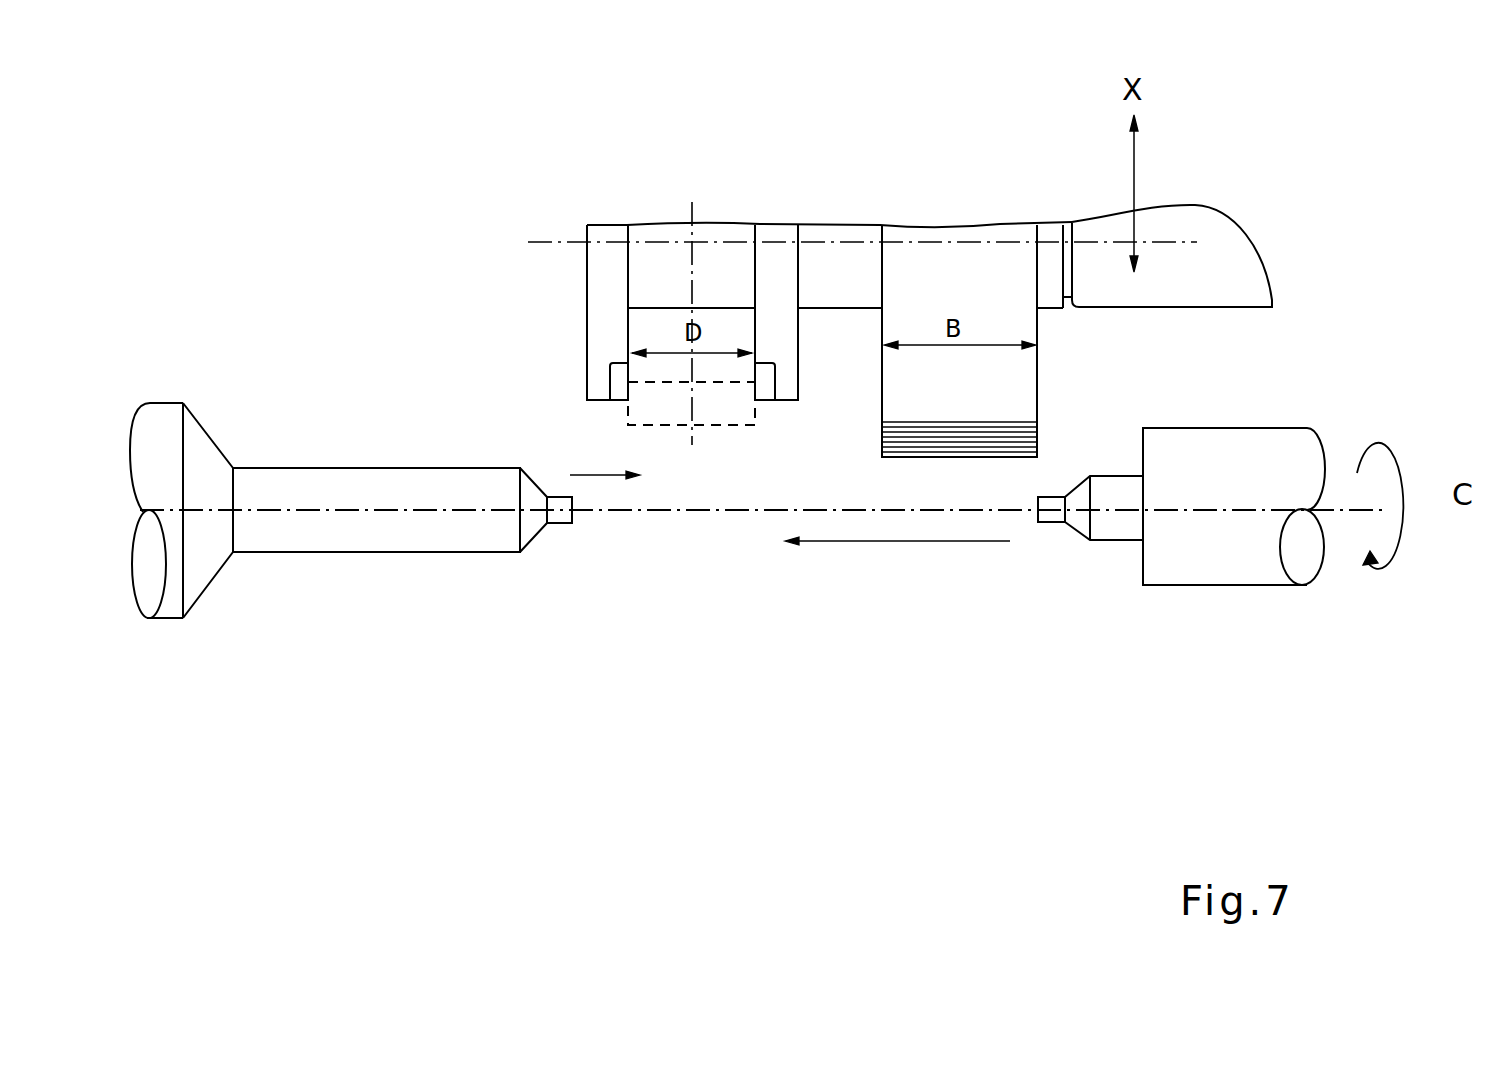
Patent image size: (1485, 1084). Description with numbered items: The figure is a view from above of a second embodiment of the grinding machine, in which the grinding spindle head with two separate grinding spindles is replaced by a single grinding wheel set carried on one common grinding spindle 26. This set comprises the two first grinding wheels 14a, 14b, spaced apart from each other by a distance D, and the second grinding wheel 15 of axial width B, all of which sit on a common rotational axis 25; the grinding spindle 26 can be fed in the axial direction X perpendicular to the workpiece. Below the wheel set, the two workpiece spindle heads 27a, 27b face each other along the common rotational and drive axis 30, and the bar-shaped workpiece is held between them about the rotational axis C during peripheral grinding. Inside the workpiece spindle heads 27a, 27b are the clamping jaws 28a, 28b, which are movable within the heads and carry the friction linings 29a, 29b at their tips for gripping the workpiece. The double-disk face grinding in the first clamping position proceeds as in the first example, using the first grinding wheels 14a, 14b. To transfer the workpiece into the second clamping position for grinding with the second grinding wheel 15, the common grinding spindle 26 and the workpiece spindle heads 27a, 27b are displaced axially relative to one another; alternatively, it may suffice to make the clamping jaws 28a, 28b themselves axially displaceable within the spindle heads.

The first grinding wheel 14a is at (610, 345).
The first grinding wheel 14b is at (780, 337).
The second grinding wheel 15 is at (1007, 387).
The common rotational axis 25 is at (835, 242).
The common grinding spindle 26 is at (1217, 272).
The workpiece spindle head 27a is at (143, 425).
The workpiece spindle head 27b is at (1292, 468).
The clamping jaw 28a is at (405, 493).
The clamping jaw 28b is at (1110, 490).
The friction lining 29a is at (560, 515).
The friction lining 29b is at (1038, 522).
The common rotational and drive axis 30 is at (702, 512).